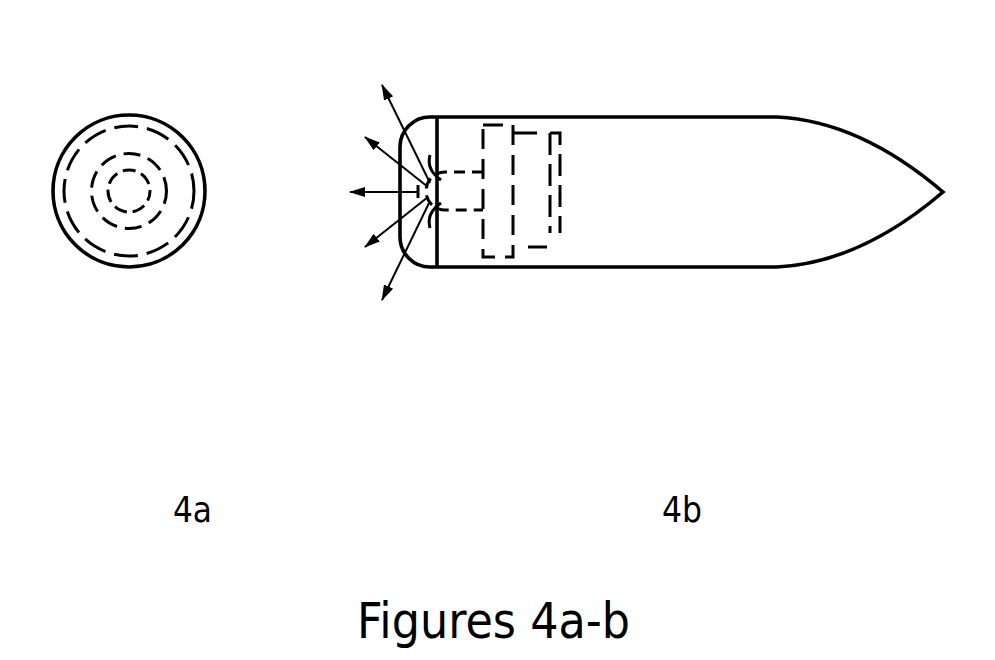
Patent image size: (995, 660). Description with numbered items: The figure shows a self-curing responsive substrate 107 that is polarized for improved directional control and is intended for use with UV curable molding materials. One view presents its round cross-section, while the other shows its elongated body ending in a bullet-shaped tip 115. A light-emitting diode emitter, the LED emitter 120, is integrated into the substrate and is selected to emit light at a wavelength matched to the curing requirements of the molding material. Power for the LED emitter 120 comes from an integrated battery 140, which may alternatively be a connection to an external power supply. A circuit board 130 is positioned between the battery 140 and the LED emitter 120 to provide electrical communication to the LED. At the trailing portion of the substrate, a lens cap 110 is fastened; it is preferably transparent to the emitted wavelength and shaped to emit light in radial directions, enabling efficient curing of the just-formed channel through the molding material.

In FIG. 4B, the self-curing responsive substrate 107 is at (646, 231).
In FIG. 4A, the lens cap 110 is at (155, 100).
In FIG. 4B, the lens cap 110 is at (430, 267).
In FIG. 4B, the bullet-shaped tip 115 is at (873, 145).
In FIG. 4A, the LED emitter 120 is at (203, 213).
In FIG. 4B, the LED emitter 120 is at (454, 175).
In FIG. 4A, the circuit board 130 is at (112, 262).
In FIG. 4B, the circuit board 130 is at (493, 258).
In FIG. 4B, the battery 140 is at (542, 248).